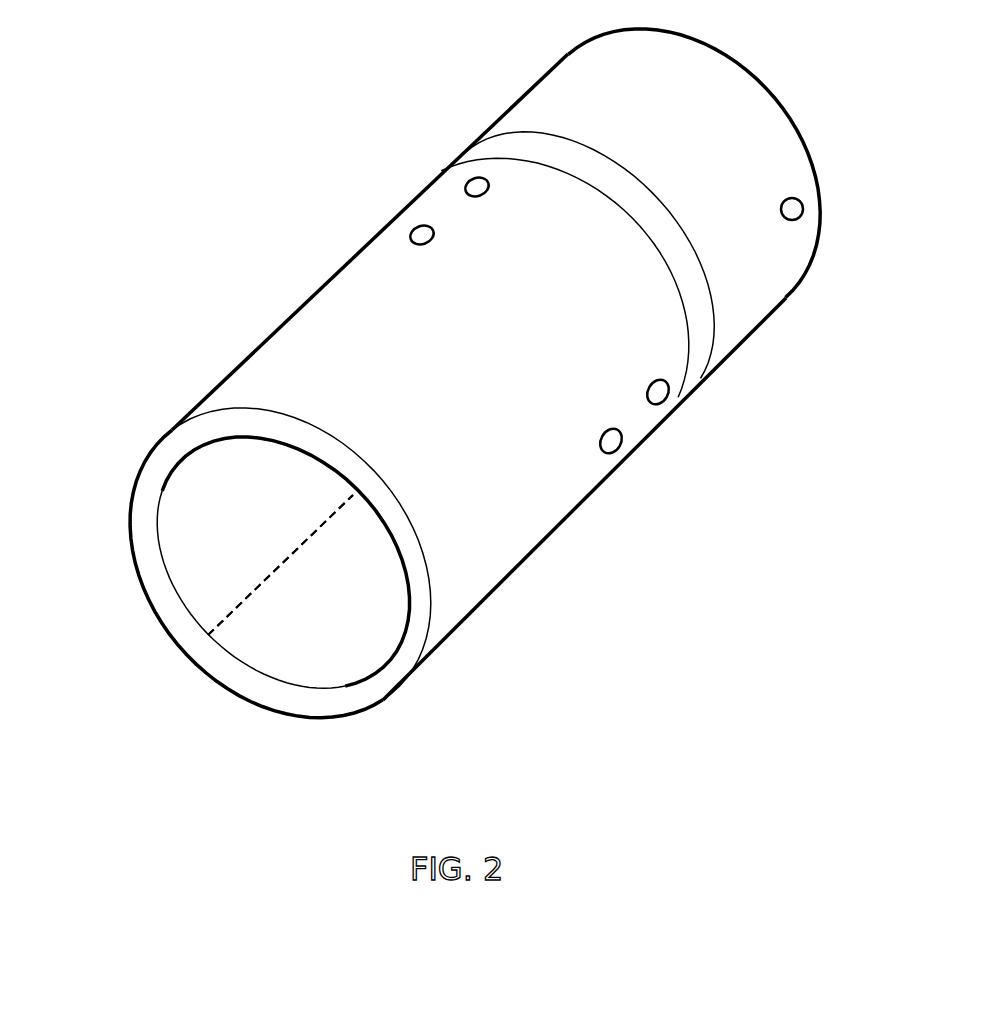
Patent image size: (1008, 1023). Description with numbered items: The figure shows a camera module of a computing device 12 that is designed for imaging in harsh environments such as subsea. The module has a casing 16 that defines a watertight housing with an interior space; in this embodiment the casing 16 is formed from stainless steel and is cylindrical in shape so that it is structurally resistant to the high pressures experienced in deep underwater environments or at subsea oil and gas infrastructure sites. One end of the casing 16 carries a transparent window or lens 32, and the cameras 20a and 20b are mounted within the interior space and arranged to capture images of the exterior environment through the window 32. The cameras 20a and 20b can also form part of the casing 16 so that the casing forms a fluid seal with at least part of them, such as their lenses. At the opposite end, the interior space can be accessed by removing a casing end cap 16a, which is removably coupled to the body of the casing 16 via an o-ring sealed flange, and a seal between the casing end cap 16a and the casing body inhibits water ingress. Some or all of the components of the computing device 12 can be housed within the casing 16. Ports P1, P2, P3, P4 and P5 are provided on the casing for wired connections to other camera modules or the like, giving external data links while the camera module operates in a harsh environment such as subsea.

The computing device 12 is at (278, 126).
The casing 16 is at (272, 334).
The casing end cap 16a is at (733, 90).
The camera 20a is at (200, 545).
The camera 20b is at (280, 638).
The transparent window or lens 32 is at (343, 688).
The port P1 is at (417, 227).
The port P2 is at (473, 178).
The port P3 is at (620, 457).
The port P4 is at (667, 407).
The port P5 is at (800, 206).